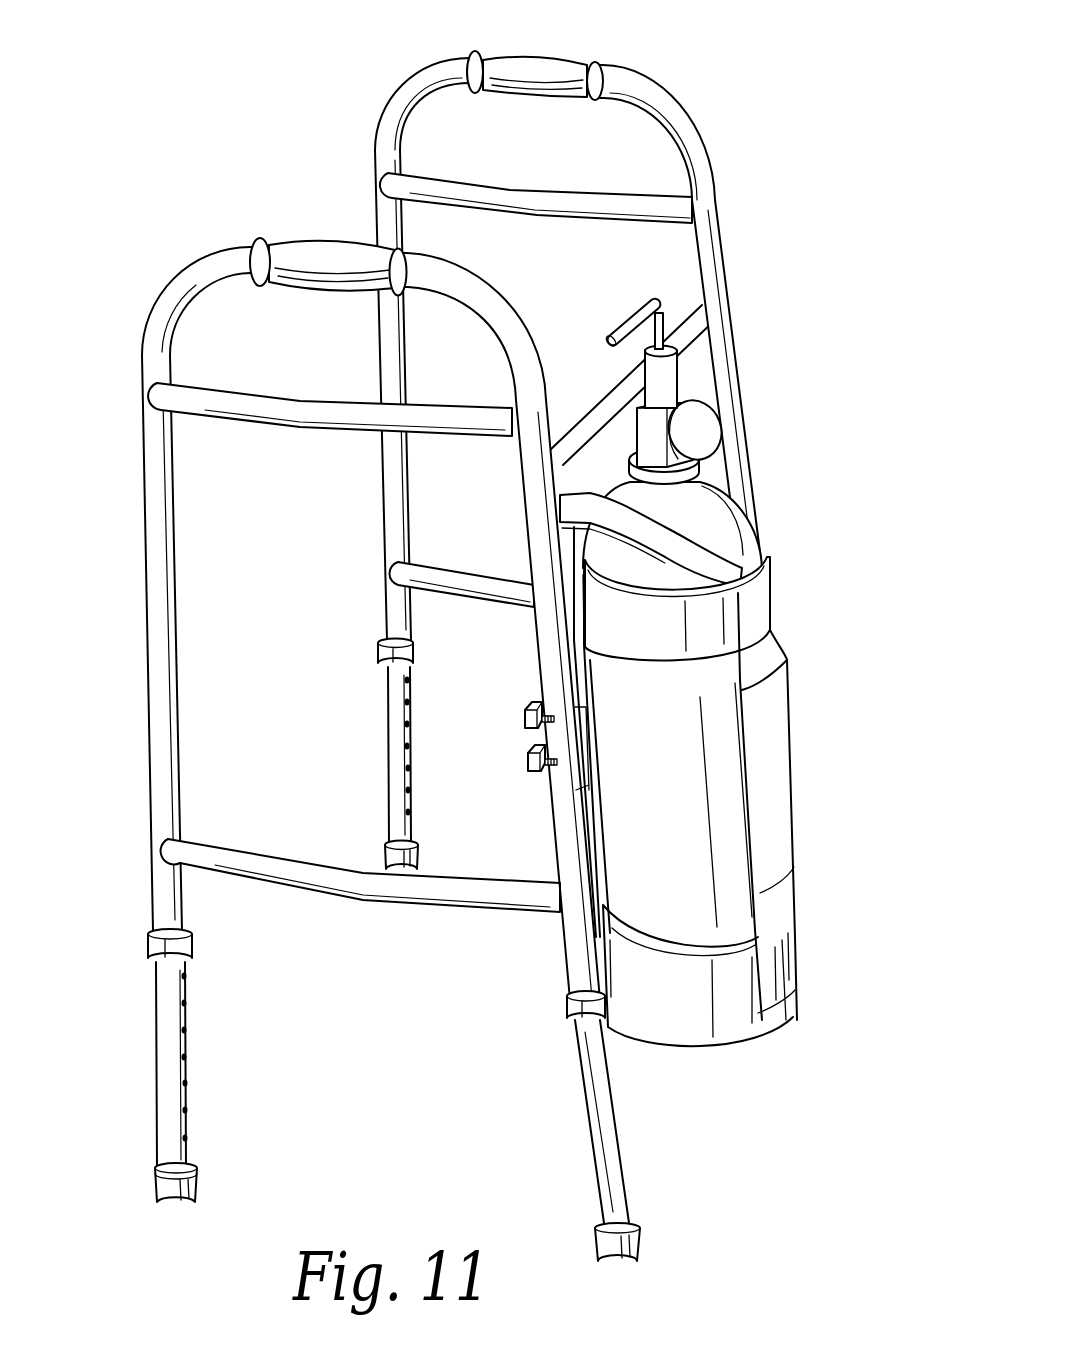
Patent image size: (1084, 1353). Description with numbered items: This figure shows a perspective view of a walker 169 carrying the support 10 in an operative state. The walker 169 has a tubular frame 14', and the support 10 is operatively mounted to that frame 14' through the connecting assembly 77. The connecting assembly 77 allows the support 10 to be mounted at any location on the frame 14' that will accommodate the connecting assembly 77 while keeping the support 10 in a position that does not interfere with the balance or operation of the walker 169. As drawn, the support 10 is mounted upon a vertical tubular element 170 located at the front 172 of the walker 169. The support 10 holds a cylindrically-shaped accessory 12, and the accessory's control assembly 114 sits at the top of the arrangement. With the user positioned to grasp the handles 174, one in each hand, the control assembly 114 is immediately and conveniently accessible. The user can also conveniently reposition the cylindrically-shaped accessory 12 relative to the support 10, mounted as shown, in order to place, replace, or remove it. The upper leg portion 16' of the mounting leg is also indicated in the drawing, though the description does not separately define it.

The support 10 is at (775, 718).
The cylindrically-shaped accessory 12 is at (660, 803).
The frame 14' is at (698, 1140).
The upper leg portion 16' is at (515, 715).
The connecting assembly 77 is at (571, 788).
The control assembly 114 is at (700, 397).
The walker 169 is at (141, 609).
The vertical tubular element 170 is at (533, 632).
The front 172 is at (746, 446).
The handles 174 is at (342, 253).